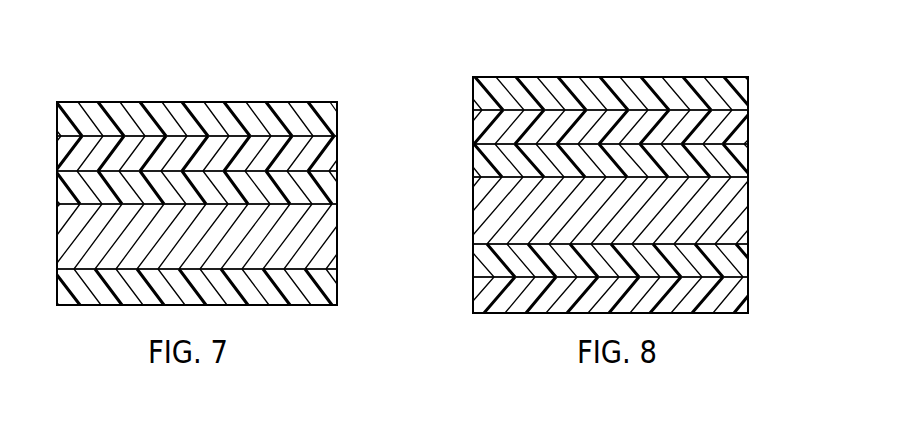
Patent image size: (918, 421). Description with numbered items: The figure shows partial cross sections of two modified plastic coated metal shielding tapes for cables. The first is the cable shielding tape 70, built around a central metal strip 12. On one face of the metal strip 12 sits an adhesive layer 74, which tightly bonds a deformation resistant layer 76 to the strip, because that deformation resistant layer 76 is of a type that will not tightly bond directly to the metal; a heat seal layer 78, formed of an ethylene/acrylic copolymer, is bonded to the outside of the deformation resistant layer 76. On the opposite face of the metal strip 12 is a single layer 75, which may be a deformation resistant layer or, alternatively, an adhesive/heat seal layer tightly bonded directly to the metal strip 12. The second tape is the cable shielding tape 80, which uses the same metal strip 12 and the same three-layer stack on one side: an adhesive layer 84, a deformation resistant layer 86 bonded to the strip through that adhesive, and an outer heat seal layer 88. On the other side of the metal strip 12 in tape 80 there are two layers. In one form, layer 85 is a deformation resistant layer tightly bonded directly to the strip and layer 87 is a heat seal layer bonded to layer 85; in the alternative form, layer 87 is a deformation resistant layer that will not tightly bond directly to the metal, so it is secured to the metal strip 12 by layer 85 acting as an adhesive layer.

In FIG. 7, the cable shielding tape 70 is at (92, 96).
In FIG. 7, the heat seal layer 78 is at (330, 123).
In FIG. 7, the deformation resistant layer 76 is at (328, 160).
In FIG. 7, the adhesive layer 74 is at (323, 197).
In FIG. 7, the metal strip 12 is at (325, 240).
In FIG. 8, the metal strip 12 is at (735, 220).
In FIG. 7, the deformation resistant layer or adhesive/heat seal layer 75 is at (325, 288).
In FIG. 8, the cable shielding tape 80 is at (502, 71).
In FIG. 8, the heat seal layer 88 is at (738, 97).
In FIG. 8, the deformation resistant layer 86 is at (737, 129).
In FIG. 8, the adhesive layer 84 is at (733, 164).
In FIG. 8, the deformation resistant layer or adhesive layer 85 is at (738, 268).
In FIG. 8, the heat seal layer or deformation resistant layer 87 is at (735, 303).